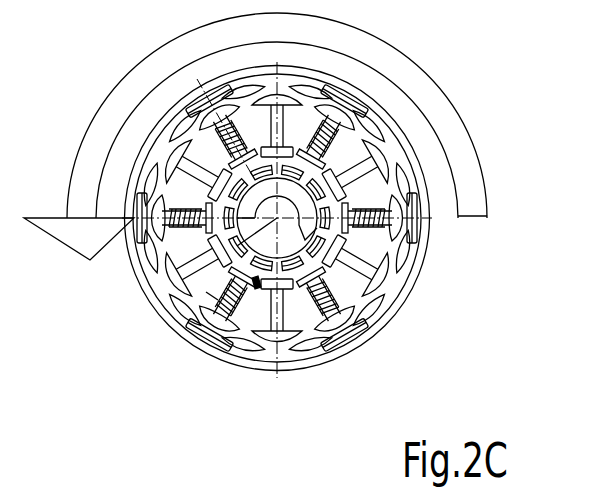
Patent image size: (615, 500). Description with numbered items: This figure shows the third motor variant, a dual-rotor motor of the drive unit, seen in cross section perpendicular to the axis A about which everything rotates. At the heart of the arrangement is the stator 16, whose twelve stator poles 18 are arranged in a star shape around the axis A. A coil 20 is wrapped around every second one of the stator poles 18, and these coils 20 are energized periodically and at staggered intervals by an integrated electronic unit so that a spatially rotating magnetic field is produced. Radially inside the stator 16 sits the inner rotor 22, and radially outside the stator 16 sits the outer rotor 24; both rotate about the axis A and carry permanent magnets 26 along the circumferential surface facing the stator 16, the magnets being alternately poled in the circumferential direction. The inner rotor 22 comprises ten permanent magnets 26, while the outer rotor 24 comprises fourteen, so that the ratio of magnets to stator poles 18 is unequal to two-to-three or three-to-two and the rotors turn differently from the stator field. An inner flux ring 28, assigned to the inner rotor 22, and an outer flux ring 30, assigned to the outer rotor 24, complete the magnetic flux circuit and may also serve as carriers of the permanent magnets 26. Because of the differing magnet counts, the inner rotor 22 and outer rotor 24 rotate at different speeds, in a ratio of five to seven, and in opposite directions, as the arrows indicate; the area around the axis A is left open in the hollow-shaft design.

The stator 16 is at (405, 256).
The stator poles 18 is at (243, 240).
The coil 20 is at (335, 291).
The inner rotor 22 is at (254, 289).
The outer rotor 24 is at (137, 286).
The permanent magnets 26 is at (372, 227).
The inner flux ring 28 is at (380, 271).
The outer flux ring 30 is at (365, 335).
The axis A is at (212, 296).